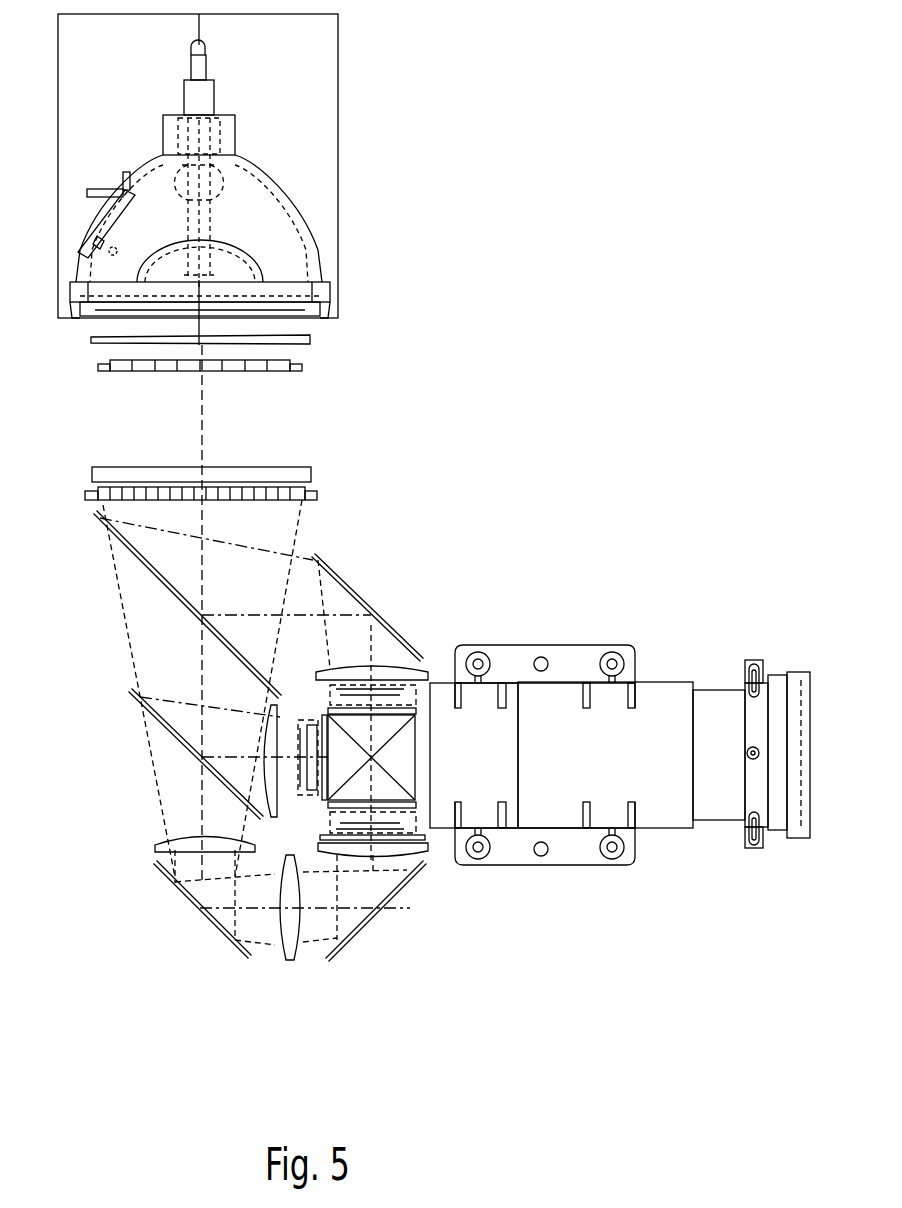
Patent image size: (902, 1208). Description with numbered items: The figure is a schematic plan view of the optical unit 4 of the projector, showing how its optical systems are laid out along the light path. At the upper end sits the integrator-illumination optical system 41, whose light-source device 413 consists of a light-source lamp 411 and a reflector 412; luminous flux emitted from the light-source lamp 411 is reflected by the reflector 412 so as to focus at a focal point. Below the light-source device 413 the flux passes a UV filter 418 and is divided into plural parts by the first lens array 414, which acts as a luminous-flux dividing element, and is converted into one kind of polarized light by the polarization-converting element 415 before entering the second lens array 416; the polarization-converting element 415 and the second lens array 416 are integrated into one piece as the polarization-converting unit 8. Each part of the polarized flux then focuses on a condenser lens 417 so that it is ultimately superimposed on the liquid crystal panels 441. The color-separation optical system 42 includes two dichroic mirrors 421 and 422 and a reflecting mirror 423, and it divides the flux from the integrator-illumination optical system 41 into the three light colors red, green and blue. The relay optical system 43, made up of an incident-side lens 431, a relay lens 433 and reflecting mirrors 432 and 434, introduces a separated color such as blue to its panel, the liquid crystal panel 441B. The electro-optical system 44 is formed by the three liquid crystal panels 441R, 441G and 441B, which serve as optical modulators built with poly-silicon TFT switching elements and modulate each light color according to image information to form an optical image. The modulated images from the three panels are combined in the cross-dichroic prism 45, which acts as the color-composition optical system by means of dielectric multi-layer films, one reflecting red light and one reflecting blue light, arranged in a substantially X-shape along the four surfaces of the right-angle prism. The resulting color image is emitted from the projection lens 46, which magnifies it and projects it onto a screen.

The optical unit 4 is at (590, 252).
The integrator-illumination optical system 41 is at (347, 398).
The light-source lamp 411 is at (222, 210).
The reflector 412 is at (303, 236).
The light-source device 413 is at (427, 143).
The first lens array 414 is at (148, 373).
The polarization-converting element 415 is at (297, 470).
The second lens array 416 is at (283, 497).
The condenser lens 417 is at (380, 668).
The UV filter 418 is at (308, 341).
The polarization-converting unit 8 is at (397, 443).
The color-separation optical system 42 is at (97, 603).
The dichroic mirror 421 is at (193, 610).
The dichroic mirror 422 is at (142, 697).
The reflecting mirror 423 is at (353, 595).
The relay optical system 43 is at (188, 942).
The incident-side lens 431 is at (162, 845).
The reflecting mirror 432 is at (160, 877).
The relay lens 433 is at (295, 958).
The reflecting mirror 434 is at (348, 932).
The electro-optical system 44 is at (430, 683).
The liquid crystal panels 441 is at (338, 759).
The liquid crystal panel for red light 441R is at (393, 693).
The liquid crystal panel for green light 441G is at (300, 787).
The liquid crystal panel for blue light 441B is at (393, 820).
The cross-dichroic prism 45 is at (408, 748).
The projection lens 46 is at (720, 690).